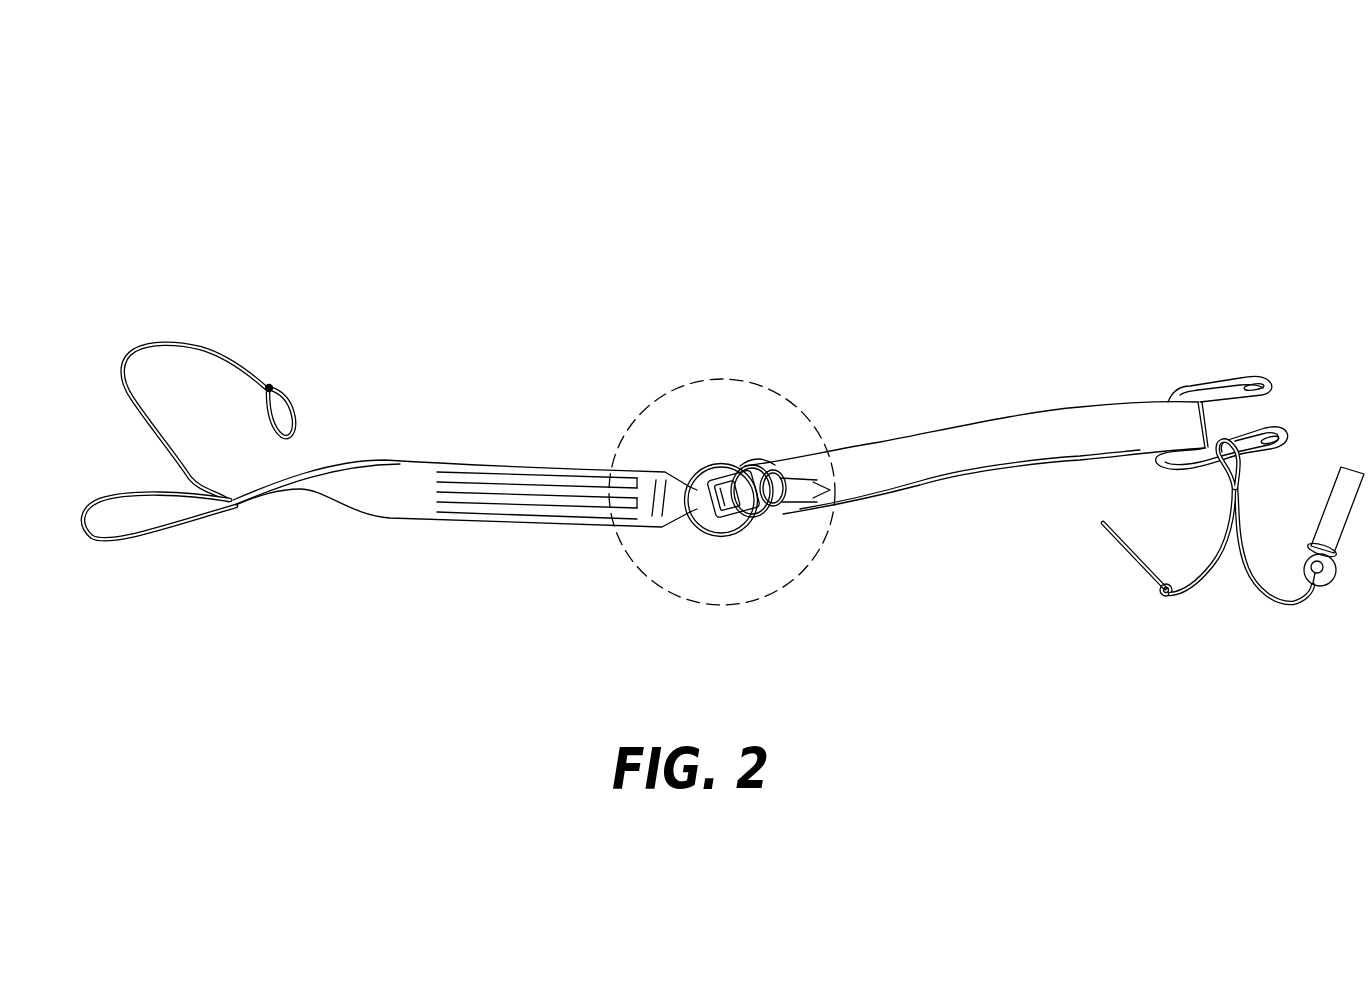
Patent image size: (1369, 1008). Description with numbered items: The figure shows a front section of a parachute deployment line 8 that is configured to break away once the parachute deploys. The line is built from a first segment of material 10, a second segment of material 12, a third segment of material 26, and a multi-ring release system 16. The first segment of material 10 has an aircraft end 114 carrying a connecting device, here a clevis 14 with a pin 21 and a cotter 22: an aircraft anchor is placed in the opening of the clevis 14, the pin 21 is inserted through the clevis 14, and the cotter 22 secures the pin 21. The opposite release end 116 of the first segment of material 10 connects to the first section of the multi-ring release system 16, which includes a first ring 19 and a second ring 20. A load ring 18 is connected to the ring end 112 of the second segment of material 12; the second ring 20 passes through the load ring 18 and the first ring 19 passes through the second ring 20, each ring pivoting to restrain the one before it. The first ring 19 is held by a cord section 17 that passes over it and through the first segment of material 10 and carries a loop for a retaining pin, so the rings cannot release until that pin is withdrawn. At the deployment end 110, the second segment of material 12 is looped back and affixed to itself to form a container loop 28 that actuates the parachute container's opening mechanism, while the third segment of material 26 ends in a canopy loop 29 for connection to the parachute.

The parachute deployment line 8 is at (143, 143).
The deployment end 110 is at (86, 372).
The third segment of material 26 is at (184, 340).
The canopy loop 29 is at (296, 402).
The container loop 28 is at (157, 532).
The second segment of material 12 is at (535, 527).
The ring end 112 is at (663, 528).
The multi-ring release system 16 is at (693, 606).
The load ring 18 is at (698, 462).
The second ring 20 is at (747, 467).
The first ring 19 is at (773, 466).
The release end 116 is at (793, 516).
The cord section 17 is at (818, 482).
The first segment of material 10 is at (980, 477).
The aircraft end 114 is at (1136, 402).
The clevis 14 is at (1250, 370).
The cotter 22 is at (1123, 553).
The pin 21 is at (1328, 515).